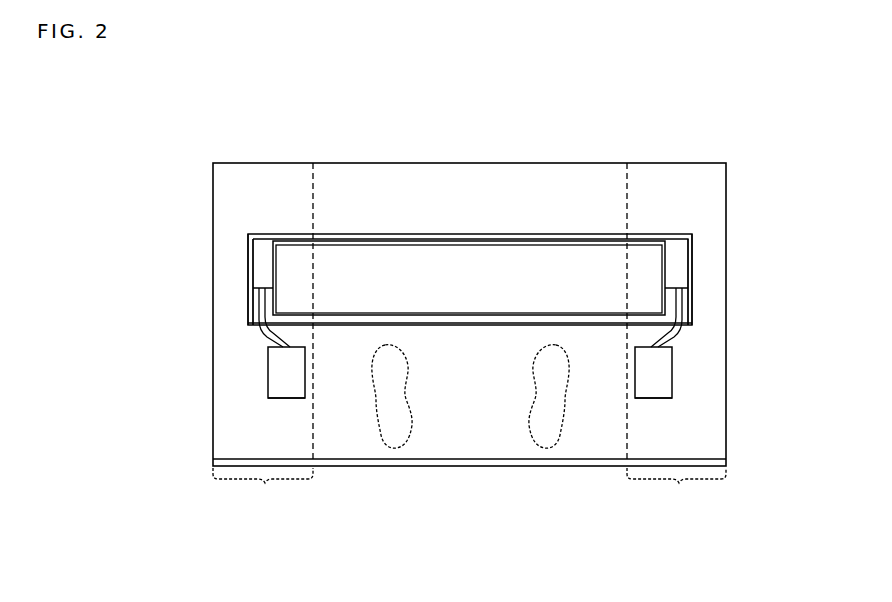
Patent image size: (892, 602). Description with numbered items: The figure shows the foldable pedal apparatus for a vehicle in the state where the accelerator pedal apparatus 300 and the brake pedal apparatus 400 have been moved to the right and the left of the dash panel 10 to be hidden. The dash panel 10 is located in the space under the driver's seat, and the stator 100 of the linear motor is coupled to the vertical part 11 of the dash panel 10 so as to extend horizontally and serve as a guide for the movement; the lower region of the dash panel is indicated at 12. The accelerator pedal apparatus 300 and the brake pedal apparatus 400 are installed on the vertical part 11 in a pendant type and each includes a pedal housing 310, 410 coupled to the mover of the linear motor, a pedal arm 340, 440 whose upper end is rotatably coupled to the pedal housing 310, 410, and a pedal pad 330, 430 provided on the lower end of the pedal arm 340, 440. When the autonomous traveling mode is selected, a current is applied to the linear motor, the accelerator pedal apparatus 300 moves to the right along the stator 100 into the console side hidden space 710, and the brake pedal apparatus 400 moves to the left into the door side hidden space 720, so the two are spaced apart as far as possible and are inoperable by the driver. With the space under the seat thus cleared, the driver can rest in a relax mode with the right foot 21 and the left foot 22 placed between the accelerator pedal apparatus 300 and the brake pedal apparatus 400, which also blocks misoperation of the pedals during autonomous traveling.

The dash panel 10 is at (548, 160).
The vertical part 11 is at (390, 186).
The lower surface 12 is at (480, 466).
The right foot 21 is at (540, 447).
The left foot 22 is at (397, 447).
The stator of the linear motor 100 is at (481, 268).
The accelerator pedal apparatus 300 is at (674, 373).
The pedal housing 310 is at (676, 265).
The pedal pad 330 is at (660, 392).
The pedal arm 340 is at (667, 337).
The brake pedal apparatus 400 is at (266, 373).
The pedal housing 410 is at (265, 263).
The pedal pad 430 is at (282, 392).
The pedal arm 440 is at (262, 336).
The console side hidden space 710 is at (676, 487).
The door side hidden space 720 is at (263, 487).